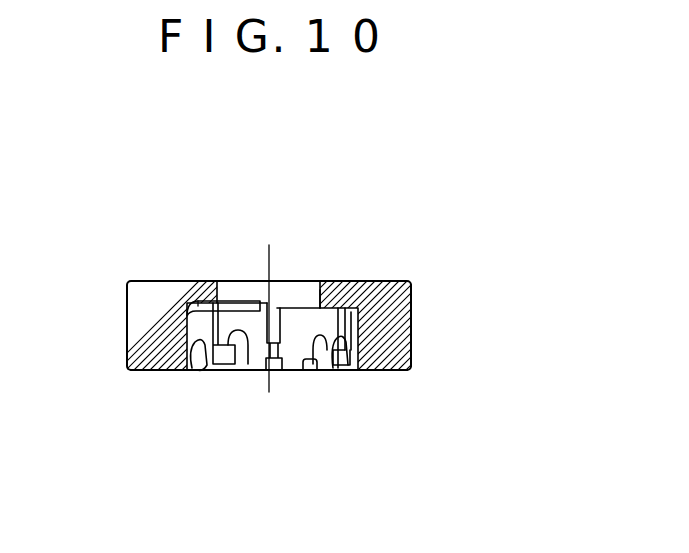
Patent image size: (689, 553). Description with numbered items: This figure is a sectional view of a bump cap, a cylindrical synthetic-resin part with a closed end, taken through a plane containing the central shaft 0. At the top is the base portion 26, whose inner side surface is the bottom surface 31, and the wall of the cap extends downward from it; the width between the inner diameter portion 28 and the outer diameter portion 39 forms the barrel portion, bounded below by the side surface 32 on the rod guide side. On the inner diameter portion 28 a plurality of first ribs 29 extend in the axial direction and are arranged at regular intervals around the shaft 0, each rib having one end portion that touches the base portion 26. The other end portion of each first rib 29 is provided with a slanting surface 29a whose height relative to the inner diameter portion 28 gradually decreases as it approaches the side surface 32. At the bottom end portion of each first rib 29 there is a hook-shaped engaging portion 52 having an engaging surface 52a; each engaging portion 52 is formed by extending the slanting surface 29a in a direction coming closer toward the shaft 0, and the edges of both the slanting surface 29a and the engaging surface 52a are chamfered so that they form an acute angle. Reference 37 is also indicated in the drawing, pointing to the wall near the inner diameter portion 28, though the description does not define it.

The base portion 26 is at (176, 282).
The shaft 0 is at (266, 263).
The inner diameter portion 28 is at (298, 322).
The inner wall surface 37 is at (320, 307).
The first ribs 29 is at (340, 315).
The bottom surface 31 is at (185, 316).
The slanting surface 29a is at (228, 365).
The engaging surface 52a is at (252, 365).
The engaging portion 52 is at (193, 365).
The outer diameter portion 39 is at (410, 308).
The side surface 32 is at (392, 371).